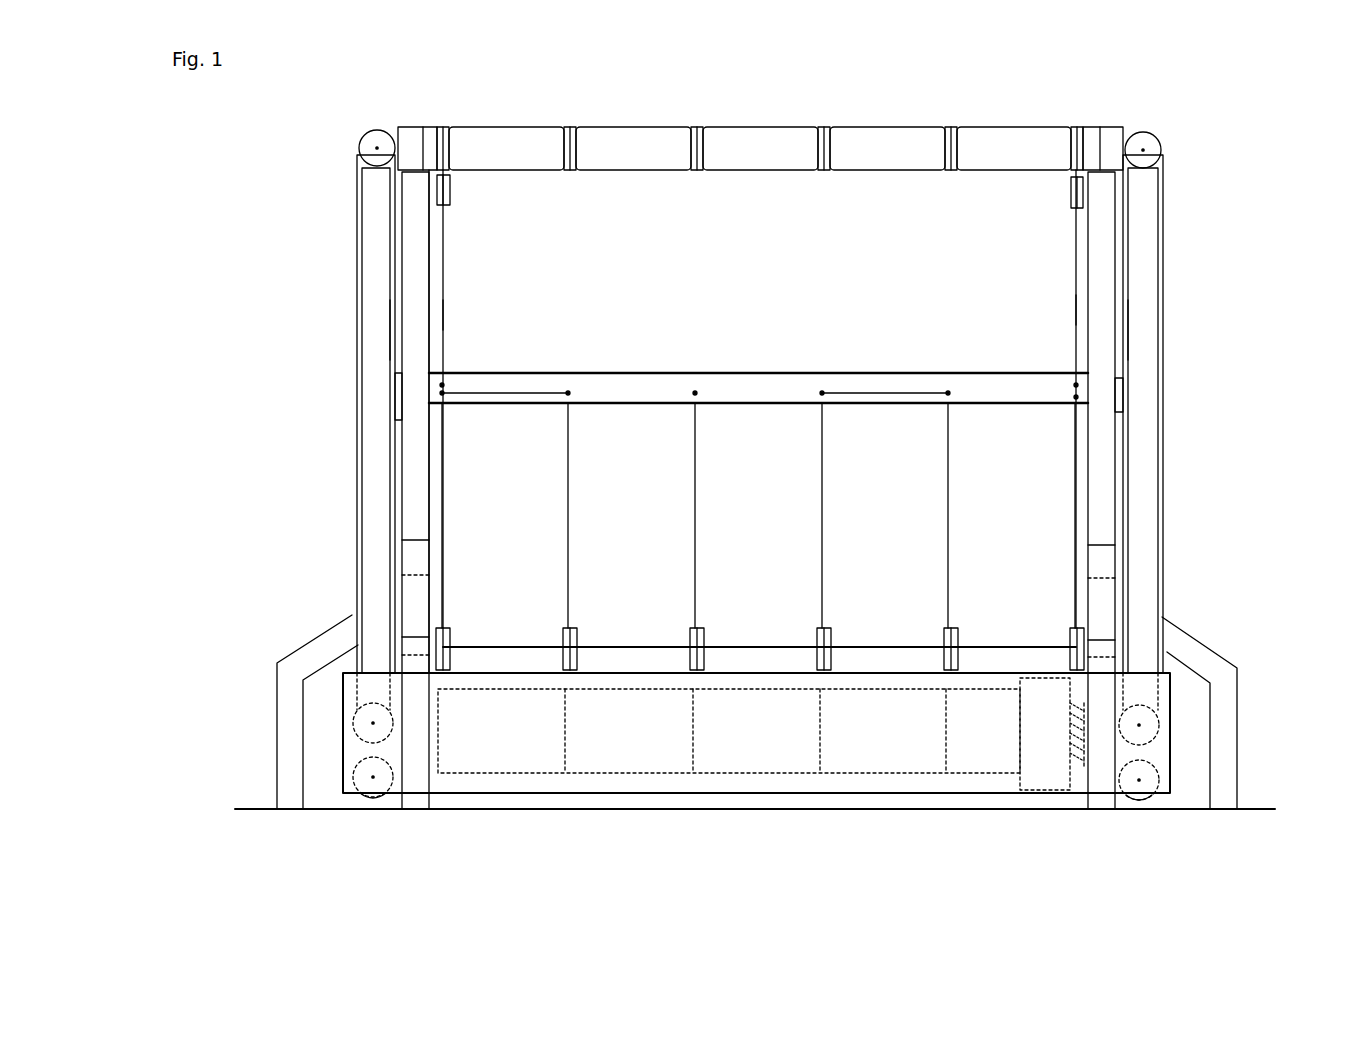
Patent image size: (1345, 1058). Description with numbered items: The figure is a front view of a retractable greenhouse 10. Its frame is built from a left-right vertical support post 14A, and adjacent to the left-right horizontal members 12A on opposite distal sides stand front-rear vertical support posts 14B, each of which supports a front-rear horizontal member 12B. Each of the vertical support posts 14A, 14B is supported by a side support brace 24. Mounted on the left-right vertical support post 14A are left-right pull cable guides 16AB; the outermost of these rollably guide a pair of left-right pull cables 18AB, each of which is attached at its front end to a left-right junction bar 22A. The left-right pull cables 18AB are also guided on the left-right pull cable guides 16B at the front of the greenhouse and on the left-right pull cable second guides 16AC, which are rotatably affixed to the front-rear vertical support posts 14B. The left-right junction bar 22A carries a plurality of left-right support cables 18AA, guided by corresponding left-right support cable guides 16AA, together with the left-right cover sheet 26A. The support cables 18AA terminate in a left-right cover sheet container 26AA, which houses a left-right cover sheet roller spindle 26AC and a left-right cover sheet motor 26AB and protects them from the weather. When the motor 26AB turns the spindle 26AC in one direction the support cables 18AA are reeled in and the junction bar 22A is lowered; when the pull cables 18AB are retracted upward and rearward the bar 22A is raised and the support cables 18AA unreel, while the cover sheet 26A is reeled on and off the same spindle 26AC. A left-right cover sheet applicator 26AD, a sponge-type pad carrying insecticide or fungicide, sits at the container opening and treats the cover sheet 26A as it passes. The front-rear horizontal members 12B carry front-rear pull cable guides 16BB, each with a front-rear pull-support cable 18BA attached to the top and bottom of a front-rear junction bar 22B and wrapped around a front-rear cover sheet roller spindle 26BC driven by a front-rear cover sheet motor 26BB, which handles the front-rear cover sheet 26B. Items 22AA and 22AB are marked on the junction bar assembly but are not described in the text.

The retractable greenhouse 10 is at (797, 33).
The left-right horizontal member 12A is at (622, 140).
The front-rear horizontal member 12B is at (370, 122).
The left-right vertical support post 14A is at (415, 267).
The front-rear vertical support post 14B is at (374, 185).
The left-right support cable guide 16AA is at (562, 630).
The left-right pull cable guide 16AB is at (443, 126).
The left-right pull cable second guide 16AC is at (452, 183).
The left-right pull cable guide 16B is at (1069, 184).
The front-rear pull cable guide 16BB is at (359, 150).
The left-right support cable 18AA is at (567, 437).
The left-right pull cable 18AB is at (444, 312).
The front-rear pull-support cable 18BA is at (393, 327).
The left-right junction bar 22A is at (778, 387).
The beam connectors 22AA is at (444, 393).
The beam end connectors 22AB is at (446, 385).
The front-rear junction bar 22B is at (394, 415).
The side support brace 24 is at (412, 559).
The left-right cover sheet 26A is at (907, 489).
The left-right cover sheet container 26AA is at (858, 790).
The left-right cover sheet motor 26AB is at (1030, 795).
The left-right cover sheet roller spindle 26AC is at (1004, 762).
The left-right cover sheet applicator 26AD is at (480, 673).
The front-rear cover sheet 26B is at (392, 470).
The front-rear cover sheet motor 26BB is at (365, 785).
The front-rear cover sheet roller spindle 26BC is at (355, 727).